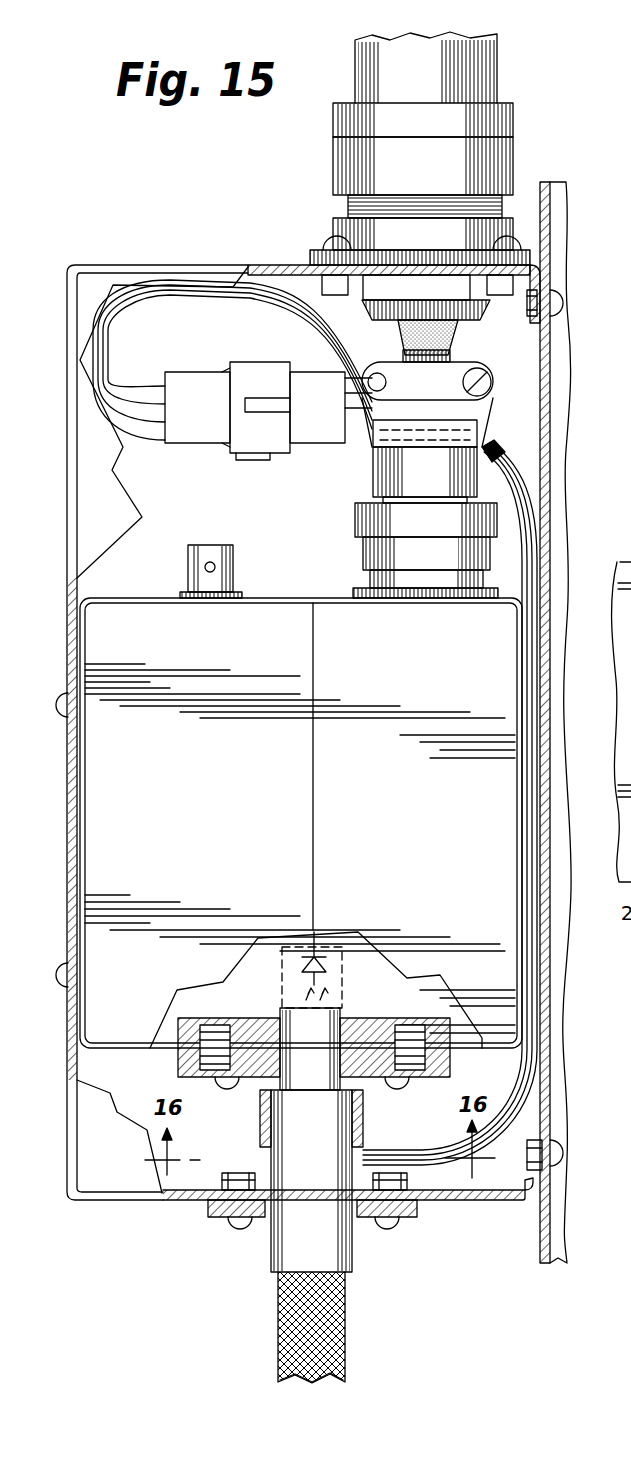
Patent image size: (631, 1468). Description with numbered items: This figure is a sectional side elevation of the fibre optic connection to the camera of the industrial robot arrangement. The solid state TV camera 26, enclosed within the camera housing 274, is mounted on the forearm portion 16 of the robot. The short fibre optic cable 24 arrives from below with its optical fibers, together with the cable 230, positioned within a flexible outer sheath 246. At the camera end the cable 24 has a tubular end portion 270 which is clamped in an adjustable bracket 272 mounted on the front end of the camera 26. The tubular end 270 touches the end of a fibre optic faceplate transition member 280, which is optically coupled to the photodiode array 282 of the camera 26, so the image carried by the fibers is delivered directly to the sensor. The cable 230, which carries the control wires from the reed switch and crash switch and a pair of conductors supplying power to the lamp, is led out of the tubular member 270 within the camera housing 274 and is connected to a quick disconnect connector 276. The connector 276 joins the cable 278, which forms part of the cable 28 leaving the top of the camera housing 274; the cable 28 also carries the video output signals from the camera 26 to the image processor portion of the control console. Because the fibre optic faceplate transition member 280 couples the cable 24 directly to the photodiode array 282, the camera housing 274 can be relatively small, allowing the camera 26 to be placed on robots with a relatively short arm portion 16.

The forearm portion 16 is at (573, 1217).
The fibre optic cable 24 is at (347, 1350).
The solid state TV camera 26 is at (110, 832).
The cable 28 is at (494, 70).
The cable 230 is at (515, 1112).
The flexible outer sheath 246 is at (278, 1322).
The tubular end portion 270 is at (272, 1250).
The adjustable bracket 272 is at (259, 1122).
The camera housing 274 is at (490, 1200).
The quick disconnect connector 276 is at (265, 435).
The cable 278 is at (249, 303).
The fibre optic faceplate transition member 280 is at (293, 1020).
The photodiode array 282 is at (277, 947).